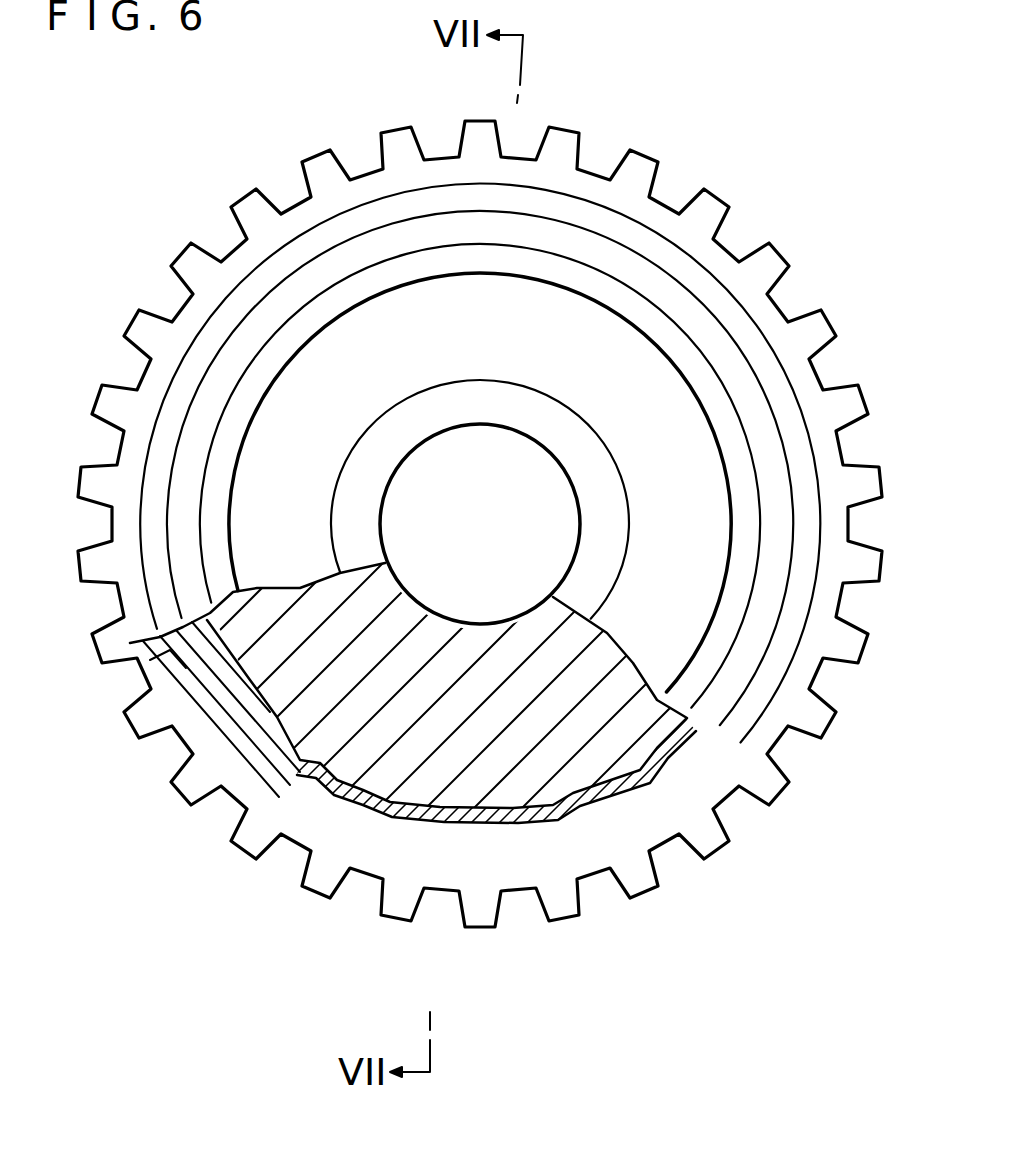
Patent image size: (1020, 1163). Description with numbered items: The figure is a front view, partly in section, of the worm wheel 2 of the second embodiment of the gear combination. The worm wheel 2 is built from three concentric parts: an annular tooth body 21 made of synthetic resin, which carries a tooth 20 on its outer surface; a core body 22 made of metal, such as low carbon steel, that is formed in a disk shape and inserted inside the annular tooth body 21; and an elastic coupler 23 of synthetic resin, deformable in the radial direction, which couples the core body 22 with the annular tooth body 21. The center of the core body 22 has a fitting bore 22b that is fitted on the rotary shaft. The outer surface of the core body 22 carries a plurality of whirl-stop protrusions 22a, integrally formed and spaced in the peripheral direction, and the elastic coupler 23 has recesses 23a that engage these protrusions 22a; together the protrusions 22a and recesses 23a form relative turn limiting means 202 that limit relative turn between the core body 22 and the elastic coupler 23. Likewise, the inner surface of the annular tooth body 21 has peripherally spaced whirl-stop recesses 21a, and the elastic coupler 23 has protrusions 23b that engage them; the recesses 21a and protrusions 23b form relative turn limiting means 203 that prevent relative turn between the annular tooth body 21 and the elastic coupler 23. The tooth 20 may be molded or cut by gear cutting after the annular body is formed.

The worm wheel 2 is at (734, 835).
The tooth 20 is at (698, 866).
The annular tooth body 21 is at (590, 845).
The whirl-stop recesses 21a is at (355, 760).
The core body 22 is at (352, 800).
The whirl-stop protrusions 22a is at (478, 835).
The fitting bore 22b is at (445, 612).
The elastic coupler 23 is at (395, 840).
The recesses 23a is at (448, 835).
The protrusions 23b is at (248, 825).
The relative turn limiting means 202 is at (552, 840).
The relative turn limiting means 203 is at (272, 770).